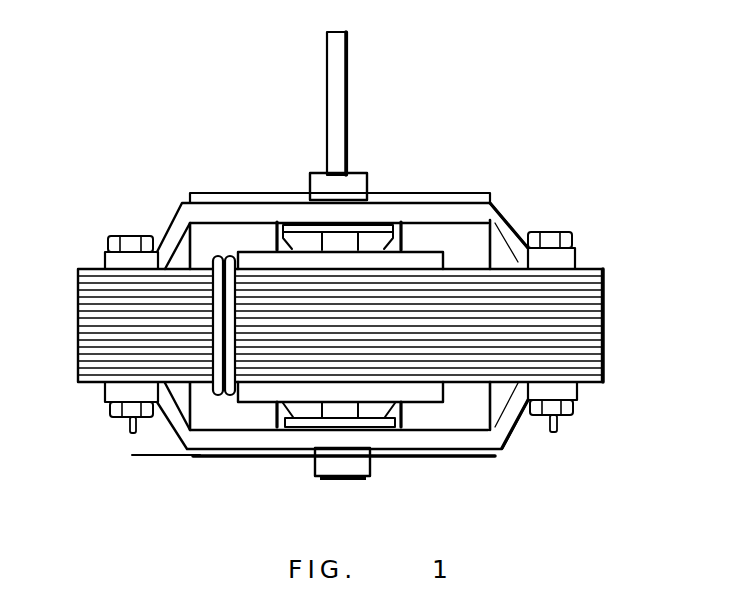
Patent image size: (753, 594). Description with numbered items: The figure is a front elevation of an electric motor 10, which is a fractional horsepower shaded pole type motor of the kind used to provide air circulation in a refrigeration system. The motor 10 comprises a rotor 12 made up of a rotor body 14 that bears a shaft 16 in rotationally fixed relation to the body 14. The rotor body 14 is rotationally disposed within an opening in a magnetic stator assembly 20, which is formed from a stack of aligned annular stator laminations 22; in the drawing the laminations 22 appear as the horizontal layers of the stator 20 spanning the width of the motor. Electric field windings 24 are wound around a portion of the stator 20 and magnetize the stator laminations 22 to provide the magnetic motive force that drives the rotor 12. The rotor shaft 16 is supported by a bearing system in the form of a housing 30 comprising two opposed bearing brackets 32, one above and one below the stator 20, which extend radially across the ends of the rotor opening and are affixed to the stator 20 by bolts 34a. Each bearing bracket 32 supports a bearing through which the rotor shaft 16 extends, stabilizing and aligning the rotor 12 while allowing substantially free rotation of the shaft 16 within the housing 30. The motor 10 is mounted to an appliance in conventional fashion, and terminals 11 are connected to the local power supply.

The electric motor 10 is at (160, 72).
The terminals 11 is at (158, 457).
The rotor 12 is at (247, 250).
The rotor body 14 is at (248, 402).
The shaft 16 is at (348, 70).
The magnetic stator assembly 20 is at (620, 394).
The stator laminations 22 is at (602, 309).
The electric field windings 24 is at (465, 192).
The housing 30 is at (518, 453).
The bearing brackets 32 is at (288, 213).
The bolts 34a is at (123, 235).